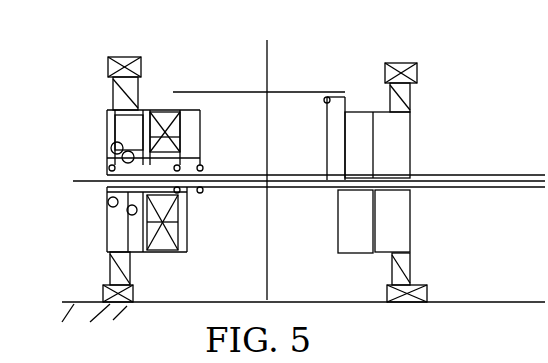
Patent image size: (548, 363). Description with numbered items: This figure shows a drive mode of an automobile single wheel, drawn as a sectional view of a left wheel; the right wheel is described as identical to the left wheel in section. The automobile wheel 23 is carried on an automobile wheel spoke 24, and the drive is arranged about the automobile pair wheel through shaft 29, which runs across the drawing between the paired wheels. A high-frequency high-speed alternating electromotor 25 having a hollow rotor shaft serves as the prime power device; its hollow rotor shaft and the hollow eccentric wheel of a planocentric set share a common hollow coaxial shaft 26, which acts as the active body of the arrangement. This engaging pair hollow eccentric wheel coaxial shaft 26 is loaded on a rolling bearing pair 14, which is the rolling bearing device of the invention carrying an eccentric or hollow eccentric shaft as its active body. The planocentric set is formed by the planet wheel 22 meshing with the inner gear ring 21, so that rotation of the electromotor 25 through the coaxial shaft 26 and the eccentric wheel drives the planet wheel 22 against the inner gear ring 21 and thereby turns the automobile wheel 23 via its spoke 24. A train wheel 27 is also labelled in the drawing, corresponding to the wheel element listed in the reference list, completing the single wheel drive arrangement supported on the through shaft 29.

The rolling bearing pair 14 is at (113, 146).
The inner gear ring 21 is at (112, 125).
The planet wheel 22 is at (137, 128).
The automobile wheel 23 is at (117, 58).
The automobile wheel spoke 24 is at (118, 92).
The high-frequency high-speed alternating electromotor 25 is at (152, 156).
The hollow coaxial shaft 26 is at (107, 183).
The train wheel 27 is at (416, 300).
The automobile pair wheel through shaft 29 is at (218, 176).